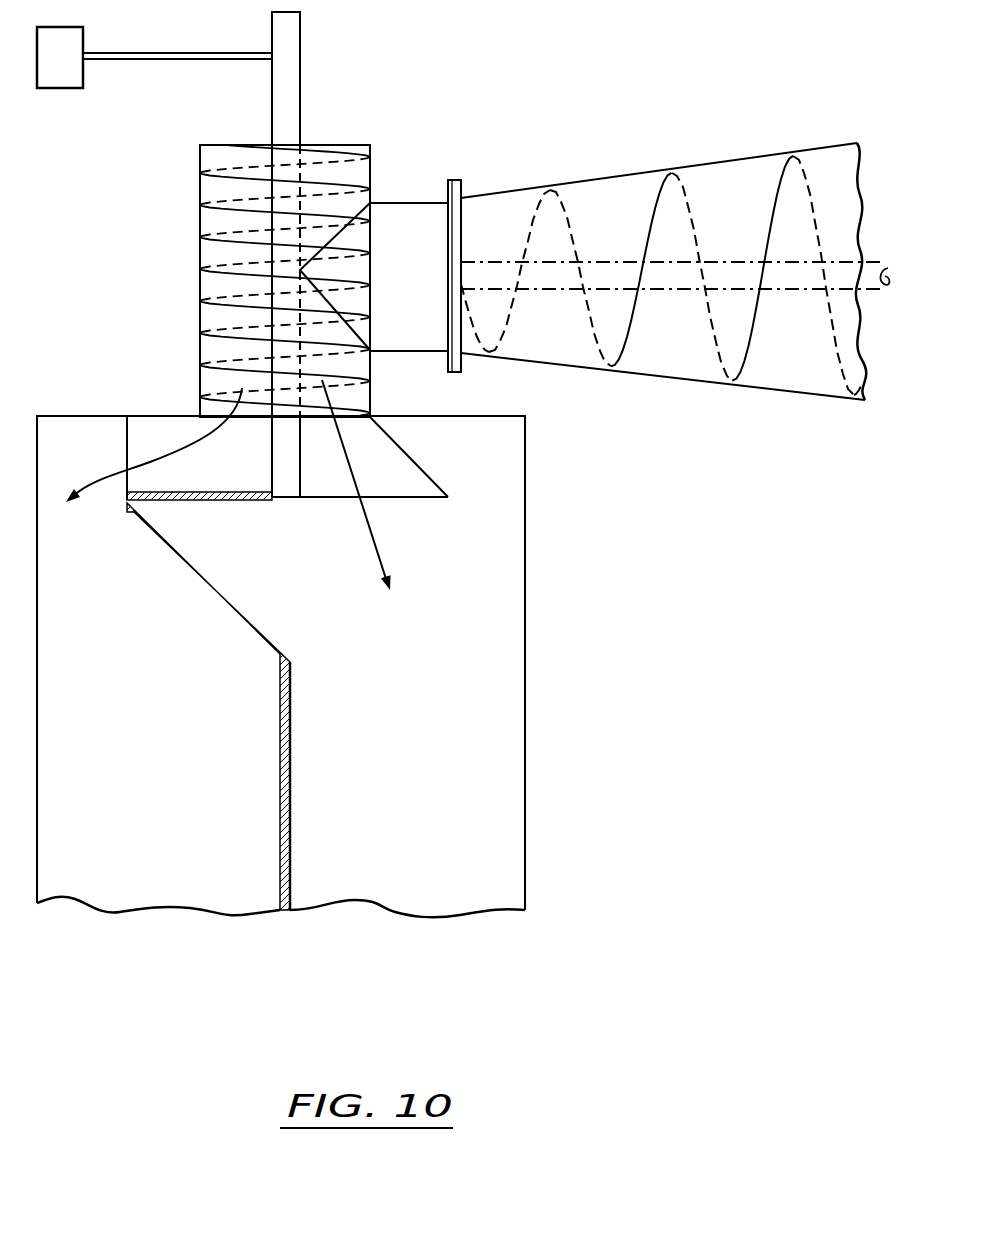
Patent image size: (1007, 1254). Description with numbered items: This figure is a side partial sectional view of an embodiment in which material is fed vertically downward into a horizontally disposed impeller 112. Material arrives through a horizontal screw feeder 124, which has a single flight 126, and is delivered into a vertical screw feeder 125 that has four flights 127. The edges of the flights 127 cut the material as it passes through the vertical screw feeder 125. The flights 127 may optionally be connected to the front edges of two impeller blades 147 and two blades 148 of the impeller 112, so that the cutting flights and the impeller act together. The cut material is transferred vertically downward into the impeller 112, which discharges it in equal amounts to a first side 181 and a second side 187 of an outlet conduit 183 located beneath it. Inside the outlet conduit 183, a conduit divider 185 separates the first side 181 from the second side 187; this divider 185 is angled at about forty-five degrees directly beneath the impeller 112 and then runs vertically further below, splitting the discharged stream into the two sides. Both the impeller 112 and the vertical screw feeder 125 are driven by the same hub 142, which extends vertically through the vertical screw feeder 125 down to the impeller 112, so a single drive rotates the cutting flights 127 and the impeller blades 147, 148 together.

The impeller 112 is at (412, 462).
The horizontal screw feeder 124 is at (623, 175).
The vertical screw feeder 125 is at (200, 218).
The single flight 126 is at (640, 357).
The flights 127 is at (218, 302).
The hub 142 is at (272, 97).
The impeller blades 147 is at (383, 485).
The blades 148 is at (200, 477).
The first side 181 is at (170, 798).
The outlet conduit 183 is at (525, 690).
The conduit divider 185 is at (258, 620).
The second side 187 is at (415, 797).